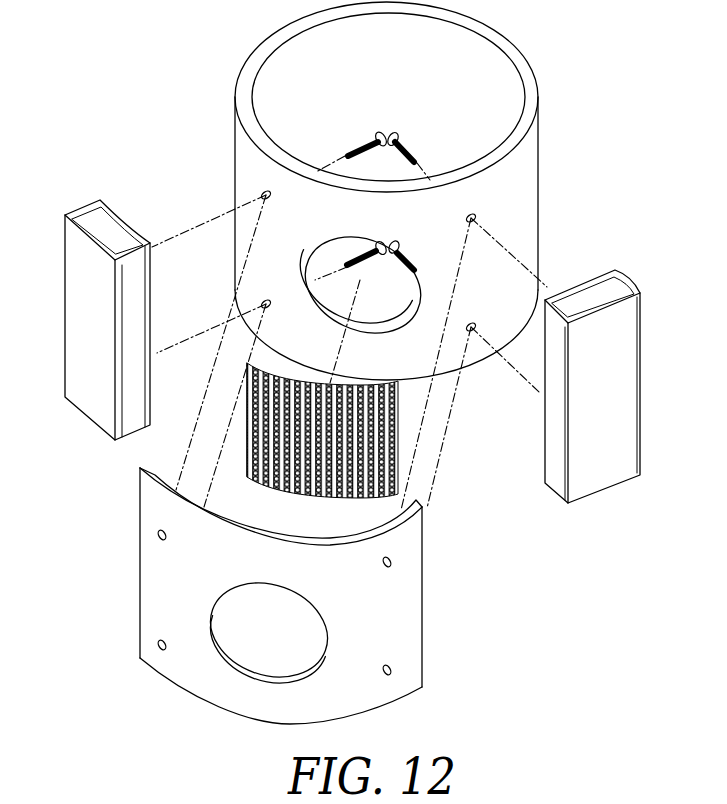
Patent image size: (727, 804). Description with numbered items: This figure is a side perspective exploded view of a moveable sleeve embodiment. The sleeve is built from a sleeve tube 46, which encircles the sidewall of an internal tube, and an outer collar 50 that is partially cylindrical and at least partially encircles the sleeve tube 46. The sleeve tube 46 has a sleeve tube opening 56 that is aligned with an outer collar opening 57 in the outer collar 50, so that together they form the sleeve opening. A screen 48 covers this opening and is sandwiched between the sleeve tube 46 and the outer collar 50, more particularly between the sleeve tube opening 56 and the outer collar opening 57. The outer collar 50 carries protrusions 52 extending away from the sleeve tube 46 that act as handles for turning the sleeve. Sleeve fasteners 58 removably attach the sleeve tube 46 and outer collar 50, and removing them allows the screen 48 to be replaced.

The sleeve tube 46 is at (520, 167).
The screen 48 is at (394, 440).
The outer collar 50 is at (403, 533).
The protrusion 52 is at (85, 300).
The sleeve tube opening 56 is at (393, 290).
The outer collar opening 57 is at (293, 615).
The sleeve fasteners 58 is at (355, 147).